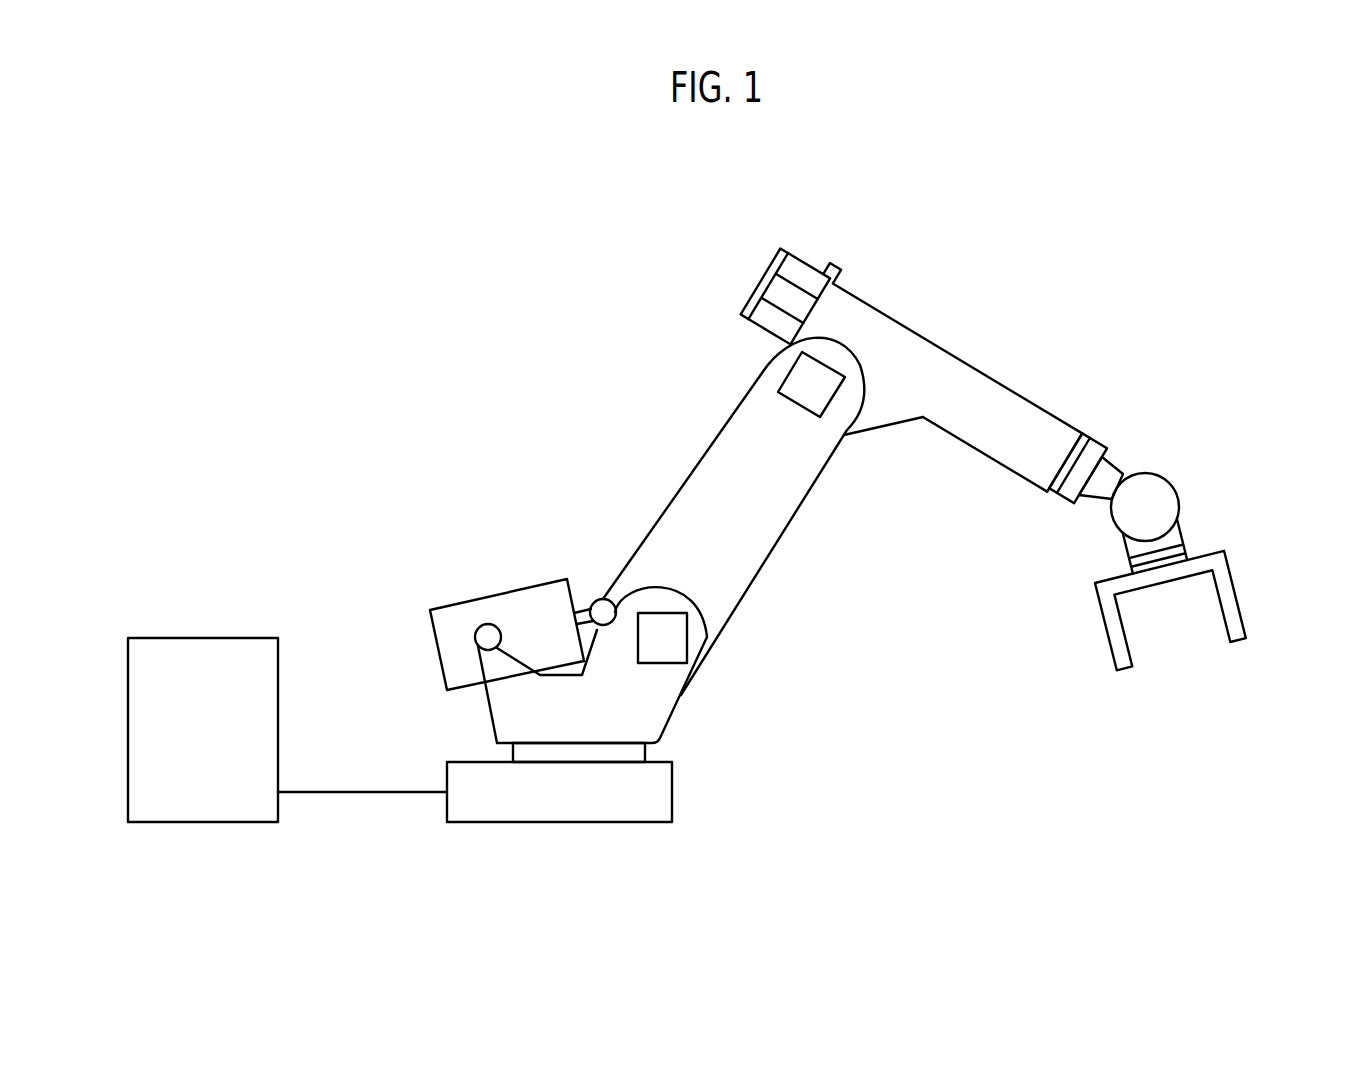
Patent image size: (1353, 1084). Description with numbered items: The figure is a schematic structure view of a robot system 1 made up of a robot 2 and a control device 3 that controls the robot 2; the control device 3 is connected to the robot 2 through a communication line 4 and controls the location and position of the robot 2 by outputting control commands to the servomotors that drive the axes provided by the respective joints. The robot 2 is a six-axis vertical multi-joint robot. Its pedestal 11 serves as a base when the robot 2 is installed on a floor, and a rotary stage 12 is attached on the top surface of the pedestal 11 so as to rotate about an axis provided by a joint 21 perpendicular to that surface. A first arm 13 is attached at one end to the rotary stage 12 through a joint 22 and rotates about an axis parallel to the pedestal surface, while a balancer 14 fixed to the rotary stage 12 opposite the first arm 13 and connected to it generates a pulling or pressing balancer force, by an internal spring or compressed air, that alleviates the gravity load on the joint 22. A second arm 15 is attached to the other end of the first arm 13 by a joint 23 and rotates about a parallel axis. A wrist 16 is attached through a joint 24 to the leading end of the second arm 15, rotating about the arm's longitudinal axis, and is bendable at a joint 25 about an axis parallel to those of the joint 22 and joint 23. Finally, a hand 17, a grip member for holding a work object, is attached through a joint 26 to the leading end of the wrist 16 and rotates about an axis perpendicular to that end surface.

The robot system 1 is at (1068, 883).
The robot 2 is at (1280, 237).
The control device 3 is at (240, 823).
The communication line 4 is at (368, 793).
The pedestal 11 is at (675, 792).
The rotary stage 12 is at (673, 718).
The first arm 13 is at (773, 540).
The balancer 14 is at (463, 610).
The second arm 15 is at (993, 398).
The wrist 16 is at (1125, 532).
The hand 17 is at (1233, 645).
The joint 21 is at (522, 753).
The joint 22 is at (682, 635).
The joint 23 is at (800, 395).
The joint 24 is at (1072, 511).
The joint 25 is at (1135, 515).
The joint 26 is at (1190, 544).